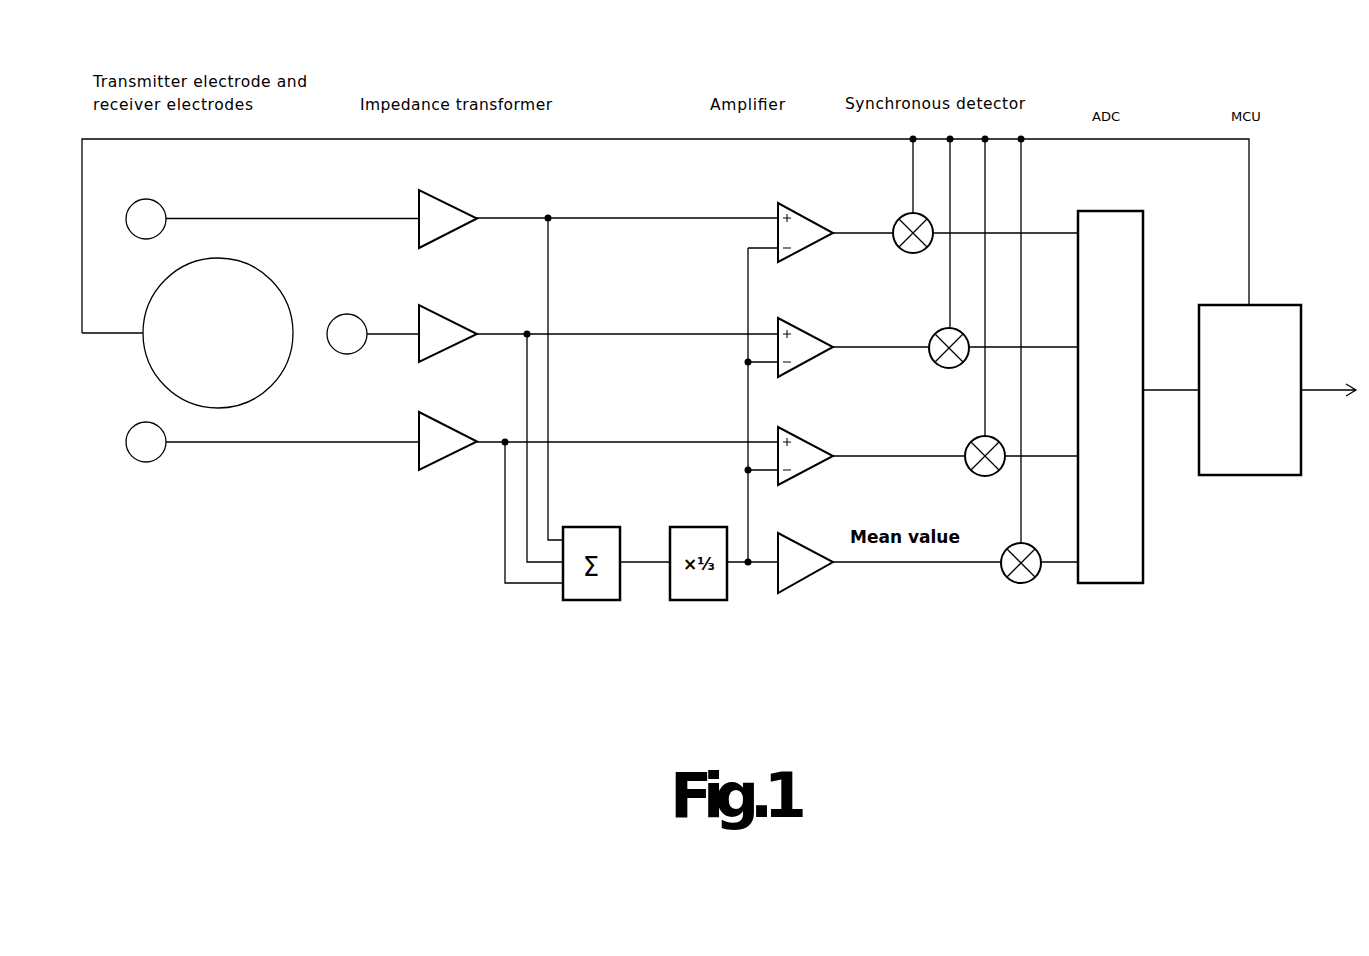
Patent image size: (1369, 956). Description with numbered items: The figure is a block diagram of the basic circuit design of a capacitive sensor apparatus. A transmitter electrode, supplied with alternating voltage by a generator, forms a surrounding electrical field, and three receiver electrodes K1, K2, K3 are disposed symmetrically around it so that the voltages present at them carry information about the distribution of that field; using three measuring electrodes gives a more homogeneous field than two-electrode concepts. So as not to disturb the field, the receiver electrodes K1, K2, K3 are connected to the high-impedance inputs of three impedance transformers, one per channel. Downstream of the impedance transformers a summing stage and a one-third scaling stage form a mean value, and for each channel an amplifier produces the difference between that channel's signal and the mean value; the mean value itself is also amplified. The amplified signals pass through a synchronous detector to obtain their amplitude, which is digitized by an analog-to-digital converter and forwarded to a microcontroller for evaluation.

The receiver electrode K1 is at (452, 219).
The receiver electrode K2 is at (552, 333).
The receiver electrode K3 is at (452, 441).